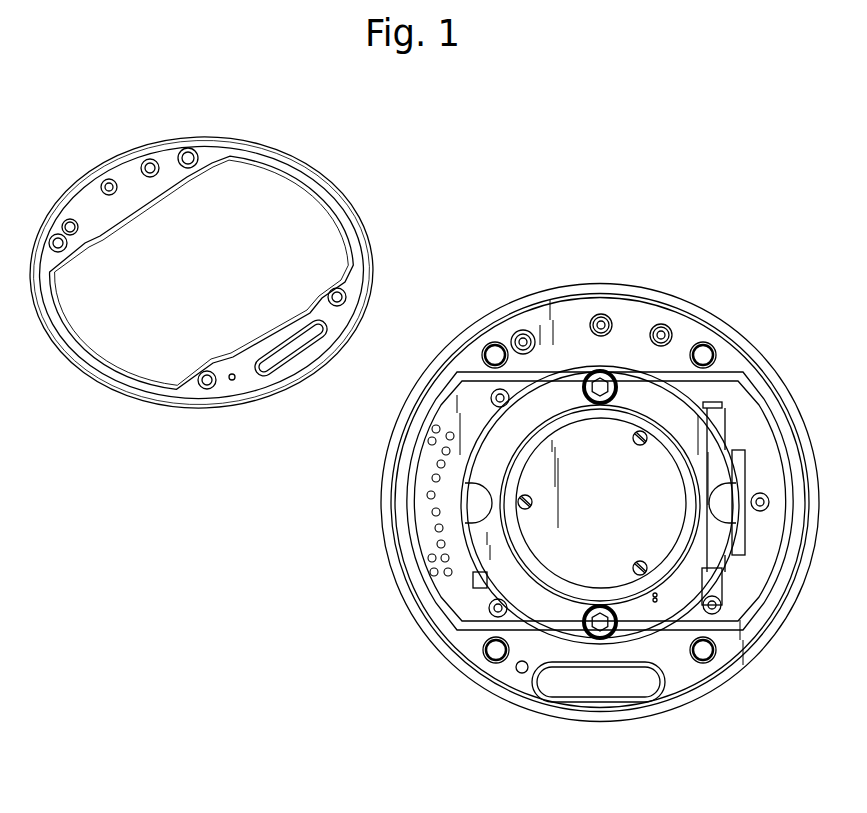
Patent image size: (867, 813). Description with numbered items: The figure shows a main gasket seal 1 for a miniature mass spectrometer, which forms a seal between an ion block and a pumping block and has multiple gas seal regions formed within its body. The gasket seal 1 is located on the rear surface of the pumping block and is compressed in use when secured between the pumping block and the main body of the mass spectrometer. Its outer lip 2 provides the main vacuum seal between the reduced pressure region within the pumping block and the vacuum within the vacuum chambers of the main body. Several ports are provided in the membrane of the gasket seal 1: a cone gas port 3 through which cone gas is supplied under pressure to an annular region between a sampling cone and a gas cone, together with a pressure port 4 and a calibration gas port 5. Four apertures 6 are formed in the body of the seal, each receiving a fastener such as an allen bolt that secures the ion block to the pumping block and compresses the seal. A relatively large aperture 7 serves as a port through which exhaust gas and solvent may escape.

The gasket seal 1 is at (253, 152).
The outer lip 2 is at (323, 180).
The cone gas port 3 is at (522, 338).
The pressure port 4 is at (601, 322).
The calibration gas port 5 is at (661, 333).
The apertures 6 is at (490, 352).
The aperture 7 is at (597, 693).